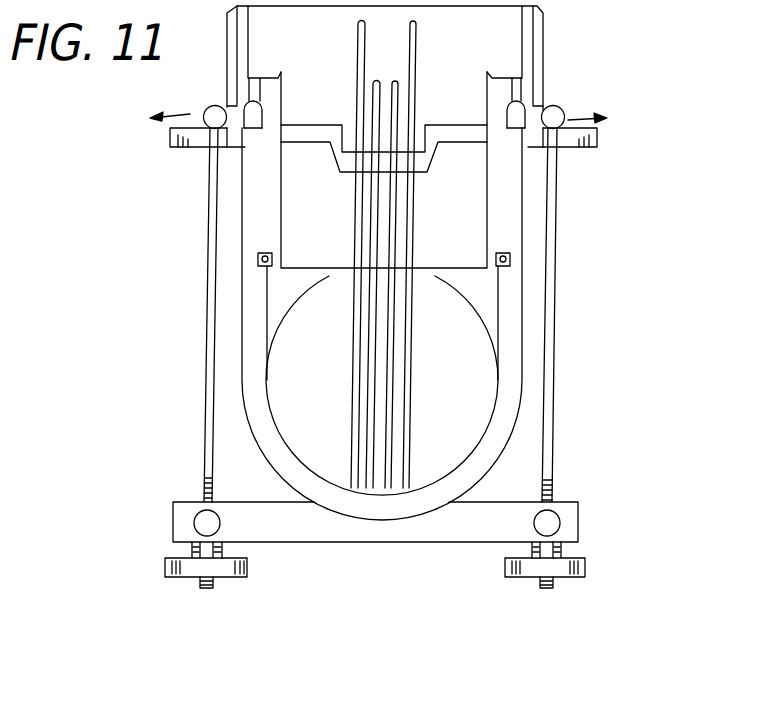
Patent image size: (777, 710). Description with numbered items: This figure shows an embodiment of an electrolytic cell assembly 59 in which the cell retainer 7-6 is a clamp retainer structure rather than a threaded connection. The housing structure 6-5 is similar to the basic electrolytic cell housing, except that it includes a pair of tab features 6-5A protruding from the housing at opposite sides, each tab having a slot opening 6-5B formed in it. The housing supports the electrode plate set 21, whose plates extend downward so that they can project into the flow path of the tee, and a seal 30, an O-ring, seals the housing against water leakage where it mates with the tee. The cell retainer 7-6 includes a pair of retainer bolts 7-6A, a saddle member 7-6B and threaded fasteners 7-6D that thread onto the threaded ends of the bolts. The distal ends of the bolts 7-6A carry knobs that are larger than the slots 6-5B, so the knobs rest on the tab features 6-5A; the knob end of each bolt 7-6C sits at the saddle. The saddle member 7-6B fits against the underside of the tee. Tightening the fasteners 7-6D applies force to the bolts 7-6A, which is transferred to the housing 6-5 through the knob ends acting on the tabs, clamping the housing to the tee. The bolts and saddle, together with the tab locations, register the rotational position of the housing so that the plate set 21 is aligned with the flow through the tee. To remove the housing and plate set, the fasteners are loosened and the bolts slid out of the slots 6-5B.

The hose clamp assembly 59 is at (580, 74).
The housing structure 6-5 is at (227, 78).
The tab features 6-5A is at (170, 137).
The slot opening 6-5B is at (210, 144).
The cell retainer 7-6 is at (188, 496).
The retainer bolts 7-6A is at (555, 280).
The saddle member 7-6B is at (282, 523).
The lower ball joint 7-6C is at (554, 501).
The threaded fasteners 7-6D is at (584, 565).
The seal 30 is at (258, 258).
The electrode plate set 21 is at (414, 402).